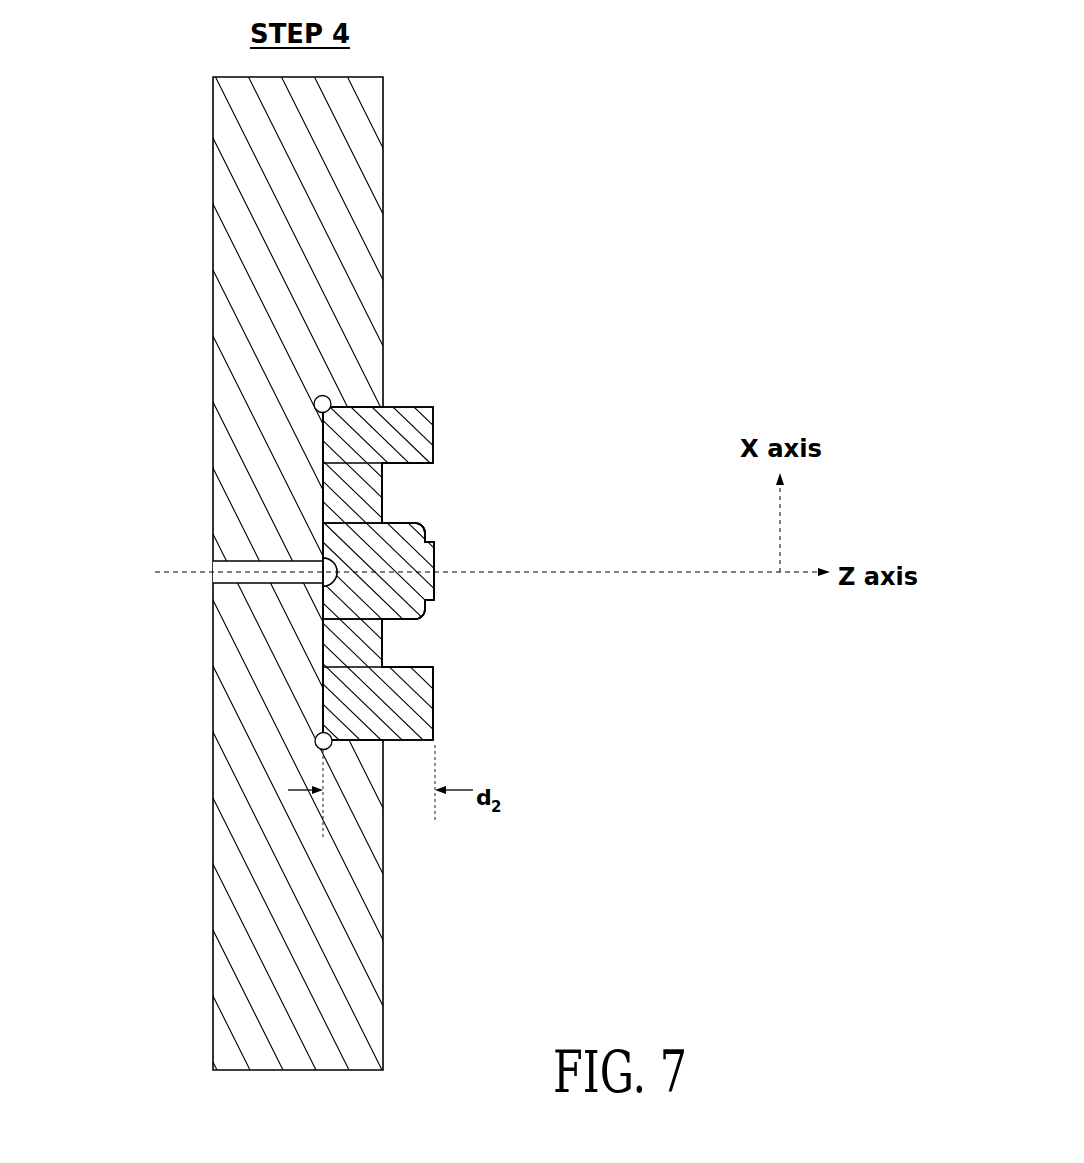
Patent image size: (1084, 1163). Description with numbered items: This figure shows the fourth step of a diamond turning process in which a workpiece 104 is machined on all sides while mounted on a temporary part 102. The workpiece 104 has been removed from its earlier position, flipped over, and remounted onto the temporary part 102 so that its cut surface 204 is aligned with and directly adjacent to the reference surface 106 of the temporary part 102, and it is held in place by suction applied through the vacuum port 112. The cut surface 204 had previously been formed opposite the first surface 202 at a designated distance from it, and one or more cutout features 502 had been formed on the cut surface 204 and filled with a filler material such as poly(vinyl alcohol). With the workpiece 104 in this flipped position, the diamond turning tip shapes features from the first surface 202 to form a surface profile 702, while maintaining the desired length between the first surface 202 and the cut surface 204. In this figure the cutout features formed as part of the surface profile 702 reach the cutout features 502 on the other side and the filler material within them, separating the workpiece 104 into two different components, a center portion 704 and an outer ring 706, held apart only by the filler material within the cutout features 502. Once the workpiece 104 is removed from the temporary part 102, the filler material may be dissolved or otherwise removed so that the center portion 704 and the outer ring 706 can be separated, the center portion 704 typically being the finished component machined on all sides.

The temporary part 102 is at (315, 105).
The workpiece 104 is at (768, 340).
The outer ring 706 is at (385, 420).
The center portion 704 is at (420, 555).
The surface profile 702 is at (407, 515).
The first surface 202 is at (440, 588).
The cutout features 502 is at (372, 640).
The cut surface 204 is at (392, 680).
The vacuum port 112 is at (207, 582).
The reference surface 106 is at (323, 710).